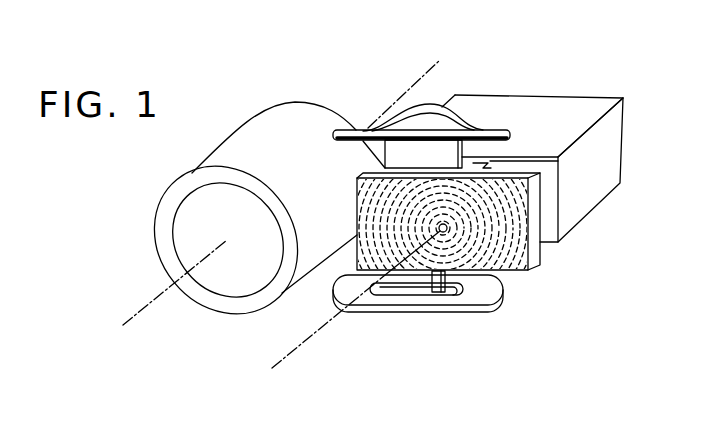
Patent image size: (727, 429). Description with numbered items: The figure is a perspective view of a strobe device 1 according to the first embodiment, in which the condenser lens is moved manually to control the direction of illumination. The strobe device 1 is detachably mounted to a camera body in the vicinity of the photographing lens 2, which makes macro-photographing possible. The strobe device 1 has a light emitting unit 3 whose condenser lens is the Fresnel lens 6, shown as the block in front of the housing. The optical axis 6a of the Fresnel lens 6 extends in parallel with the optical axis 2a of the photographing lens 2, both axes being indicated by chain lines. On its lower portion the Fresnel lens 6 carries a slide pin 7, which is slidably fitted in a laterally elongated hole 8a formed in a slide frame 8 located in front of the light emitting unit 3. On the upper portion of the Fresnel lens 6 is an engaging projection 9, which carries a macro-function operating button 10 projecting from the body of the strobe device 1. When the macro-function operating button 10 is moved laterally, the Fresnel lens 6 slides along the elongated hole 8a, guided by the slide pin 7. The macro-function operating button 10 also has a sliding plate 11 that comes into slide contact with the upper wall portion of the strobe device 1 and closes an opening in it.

The strobe device 1 is at (579, 73).
The photographing lens 2 is at (250, 130).
The optical axis of the photographing lens 2a is at (140, 316).
The light emitting unit 3 is at (606, 176).
The Fresnel lens 6 is at (517, 272).
The optical axis of the Fresnel lens 6a is at (306, 342).
The slide pin 7 is at (488, 297).
The slide frame 8 is at (413, 304).
The elongated hole 8a is at (450, 304).
The engaging projection 9 is at (558, 163).
The macro-function operating button 10 is at (428, 105).
The sliding plate 11 is at (500, 131).